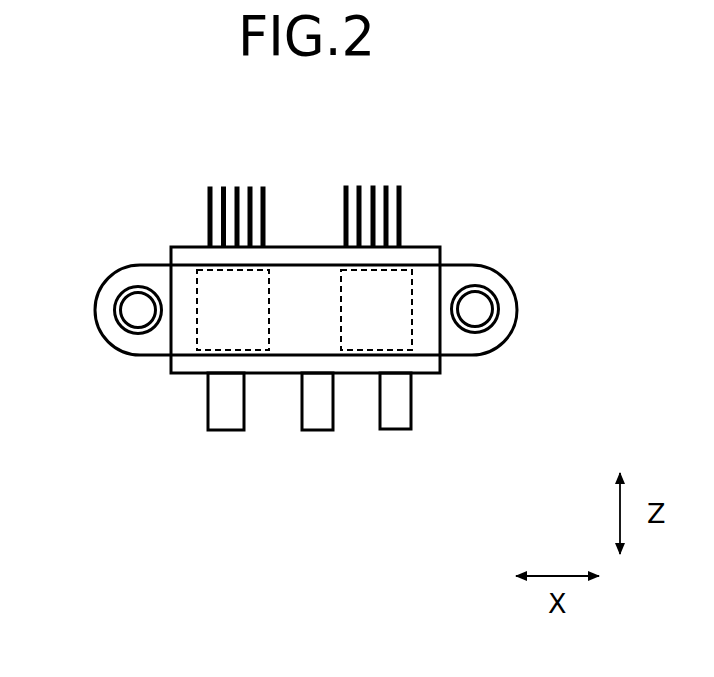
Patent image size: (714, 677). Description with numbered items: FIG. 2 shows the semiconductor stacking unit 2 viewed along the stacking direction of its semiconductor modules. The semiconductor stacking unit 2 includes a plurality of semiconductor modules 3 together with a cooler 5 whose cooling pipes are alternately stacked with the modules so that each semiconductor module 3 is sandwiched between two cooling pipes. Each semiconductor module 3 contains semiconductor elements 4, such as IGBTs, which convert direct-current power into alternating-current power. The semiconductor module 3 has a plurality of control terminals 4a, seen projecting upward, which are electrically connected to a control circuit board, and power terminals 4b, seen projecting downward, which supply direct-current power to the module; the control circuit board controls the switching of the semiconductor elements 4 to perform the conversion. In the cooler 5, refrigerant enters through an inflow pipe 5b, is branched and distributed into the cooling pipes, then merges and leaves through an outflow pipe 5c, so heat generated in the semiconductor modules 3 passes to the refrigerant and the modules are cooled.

The semiconductor stacking unit 2 is at (517, 156).
The semiconductor module 3 is at (410, 257).
The semiconductor elements 4 is at (202, 330).
The control terminals 4a is at (223, 187).
The power terminals 4b is at (390, 420).
The cooler 5 is at (118, 265).
The inflow pipe 5b is at (495, 311).
The outflow pipe 5c is at (118, 312).